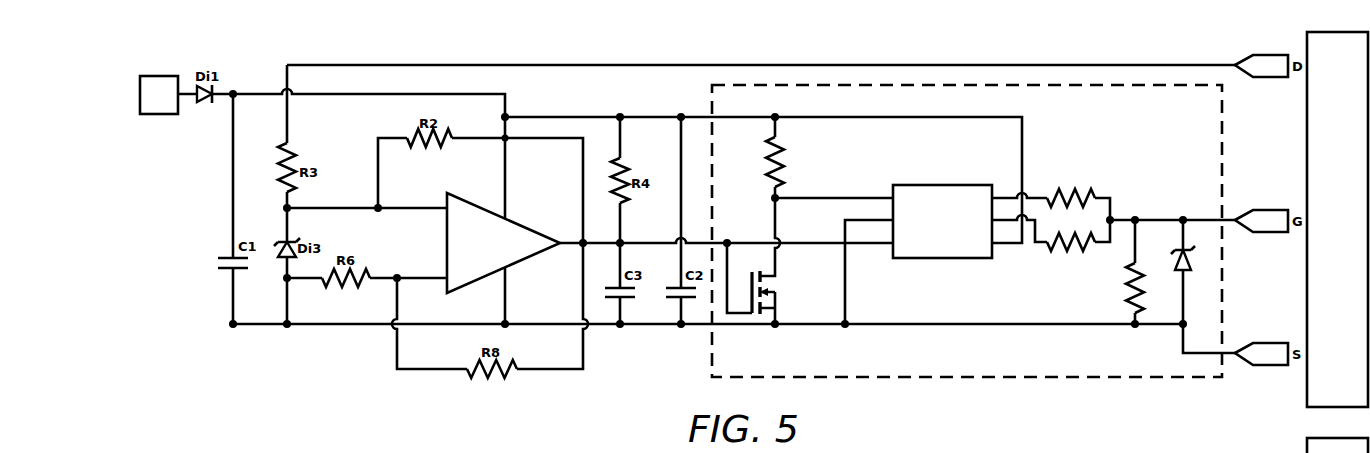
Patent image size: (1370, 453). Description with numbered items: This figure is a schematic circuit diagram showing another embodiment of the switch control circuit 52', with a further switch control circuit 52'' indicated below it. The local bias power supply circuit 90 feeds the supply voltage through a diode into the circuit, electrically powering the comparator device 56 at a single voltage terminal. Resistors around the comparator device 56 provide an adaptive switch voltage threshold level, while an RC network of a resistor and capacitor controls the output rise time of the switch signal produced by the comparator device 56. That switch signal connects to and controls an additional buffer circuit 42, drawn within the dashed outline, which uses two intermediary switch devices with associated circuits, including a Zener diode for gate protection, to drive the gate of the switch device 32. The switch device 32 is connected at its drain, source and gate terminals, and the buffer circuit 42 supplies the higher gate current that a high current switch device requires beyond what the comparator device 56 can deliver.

The switch control circuit 52' is at (243, 40).
The gate drive circuit (second) 52'' is at (234, 434).
The local bias power supply circuit 90 is at (159, 95).
The comparator device 56 is at (508, 232).
The buffer circuit 42 is at (893, 368).
The switch device 32 is at (1337, 219).